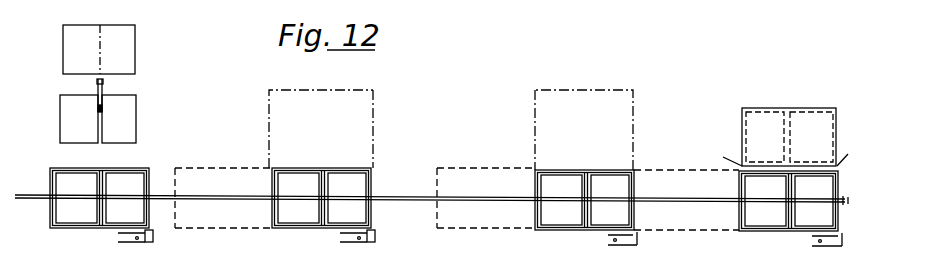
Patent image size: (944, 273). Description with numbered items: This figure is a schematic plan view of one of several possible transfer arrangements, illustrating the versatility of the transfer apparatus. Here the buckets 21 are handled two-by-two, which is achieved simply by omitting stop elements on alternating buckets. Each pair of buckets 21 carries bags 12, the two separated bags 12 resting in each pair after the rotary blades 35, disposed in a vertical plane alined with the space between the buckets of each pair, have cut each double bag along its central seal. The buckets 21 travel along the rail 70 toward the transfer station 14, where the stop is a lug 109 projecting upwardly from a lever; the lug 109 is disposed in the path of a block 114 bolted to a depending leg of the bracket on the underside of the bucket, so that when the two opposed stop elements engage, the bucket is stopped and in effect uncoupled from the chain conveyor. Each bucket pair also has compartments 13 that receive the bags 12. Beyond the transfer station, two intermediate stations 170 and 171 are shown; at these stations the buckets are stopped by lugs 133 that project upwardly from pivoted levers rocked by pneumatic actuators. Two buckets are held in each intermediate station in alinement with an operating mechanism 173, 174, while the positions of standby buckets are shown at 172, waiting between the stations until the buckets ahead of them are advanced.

The bags 12 is at (63, 69).
The rotary blades 35 is at (103, 89).
The transfer station 14 is at (152, 142).
The buckets 21 is at (149, 178).
The compartment 13 is at (113, 178).
The rail 70 is at (242, 206).
The lug 109 is at (153, 235).
The block 114 is at (149, 243).
The lugs 133 is at (375, 235).
The positions of standby buckets 172 is at (233, 162).
The operating mechanism 173 is at (320, 90).
The intermediate station 170 is at (380, 131).
The operating mechanism 174 is at (580, 90).
The intermediate station 171 is at (524, 135).